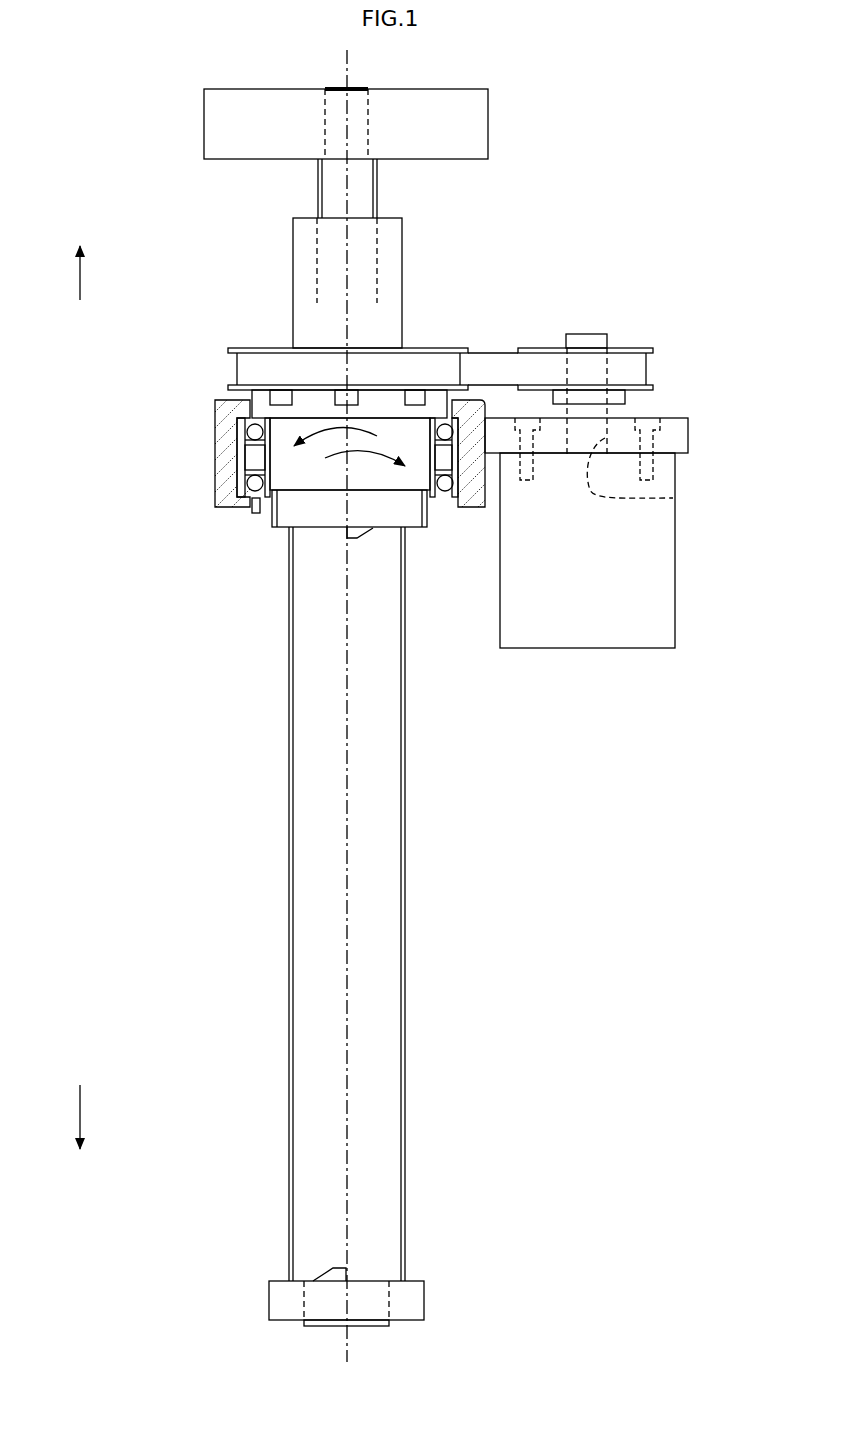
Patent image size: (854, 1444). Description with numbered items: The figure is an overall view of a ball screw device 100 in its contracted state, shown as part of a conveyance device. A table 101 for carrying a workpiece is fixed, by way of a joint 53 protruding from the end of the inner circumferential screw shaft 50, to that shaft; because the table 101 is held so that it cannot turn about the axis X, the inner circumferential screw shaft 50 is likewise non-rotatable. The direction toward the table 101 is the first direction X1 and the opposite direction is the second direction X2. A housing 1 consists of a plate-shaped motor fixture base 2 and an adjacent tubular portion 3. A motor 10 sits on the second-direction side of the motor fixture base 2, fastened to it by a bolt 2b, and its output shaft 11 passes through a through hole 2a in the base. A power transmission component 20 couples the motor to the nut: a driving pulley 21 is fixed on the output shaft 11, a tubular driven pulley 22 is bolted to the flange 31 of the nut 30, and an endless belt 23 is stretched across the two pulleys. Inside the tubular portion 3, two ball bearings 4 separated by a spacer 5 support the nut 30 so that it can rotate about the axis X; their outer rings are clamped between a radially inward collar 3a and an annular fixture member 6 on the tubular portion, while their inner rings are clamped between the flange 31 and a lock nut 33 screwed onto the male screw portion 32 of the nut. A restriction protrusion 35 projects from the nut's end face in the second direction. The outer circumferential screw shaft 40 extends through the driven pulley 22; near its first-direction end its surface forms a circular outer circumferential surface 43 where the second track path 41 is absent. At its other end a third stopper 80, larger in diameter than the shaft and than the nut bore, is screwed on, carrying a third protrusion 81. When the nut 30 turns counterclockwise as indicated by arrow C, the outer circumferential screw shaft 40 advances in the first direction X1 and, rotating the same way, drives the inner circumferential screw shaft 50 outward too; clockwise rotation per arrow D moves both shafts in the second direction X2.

The ball screw device 100 is at (657, 126).
The table 101 is at (473, 122).
The joint 53 is at (325, 125).
The inner circumferential screw shaft 50 is at (380, 190).
The circular outer circumferential surface 43 is at (304, 246).
The driven pulley 22 is at (244, 348).
The belt 23 is at (504, 368).
The driving pulley 21 is at (642, 348).
The power transmission component 20 is at (524, 317).
The output shaft 11 is at (588, 334).
The motor 10 is at (590, 625).
The housing 1 is at (674, 415).
The motor fixture base 2 is at (676, 442).
The through hole 2a is at (673, 498).
The bolt 2b is at (658, 470).
The tubular portion 3 is at (489, 508).
The collar 3a is at (465, 520).
The fixture member 6 is at (218, 405).
The ball bearing 4 is at (233, 431).
The spacer 5 is at (243, 448).
The flange 31 is at (388, 407).
The male screw portion 32 is at (272, 527).
The lock nut 33 is at (252, 510).
The restriction protrusion 35 is at (340, 535).
The nut 30 is at (365, 480).
The outer circumferential screw shaft 40 is at (375, 862).
The second track path 41 is at (405, 817).
The third stopper 80 is at (430, 1298).
The third protrusion 81 is at (326, 1266).
The axis X is at (347, 934).
The first direction X1 is at (79, 254).
The second direction X2 is at (79, 1131).
The arrow C is at (317, 437).
The arrow D is at (390, 457).